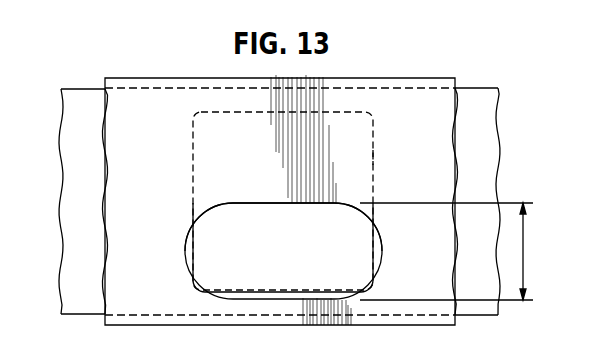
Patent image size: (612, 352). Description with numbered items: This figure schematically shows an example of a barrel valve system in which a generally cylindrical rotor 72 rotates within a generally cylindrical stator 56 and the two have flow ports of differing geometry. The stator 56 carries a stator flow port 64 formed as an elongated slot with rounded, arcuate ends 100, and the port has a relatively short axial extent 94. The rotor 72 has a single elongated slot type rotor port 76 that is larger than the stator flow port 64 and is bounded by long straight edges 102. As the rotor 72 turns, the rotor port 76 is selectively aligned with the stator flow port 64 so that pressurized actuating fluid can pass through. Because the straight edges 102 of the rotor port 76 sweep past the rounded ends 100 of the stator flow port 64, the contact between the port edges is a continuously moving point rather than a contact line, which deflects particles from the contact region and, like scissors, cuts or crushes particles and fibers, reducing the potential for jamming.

The stator 56 is at (103, 174).
The rotor 72 is at (61, 268).
The rotor port 76 is at (268, 292).
The arcuate end 100 is at (181, 243).
The straight edge 102 is at (189, 170).
The stator flow port 64 is at (243, 204).
The axial extent 94 is at (447, 251).